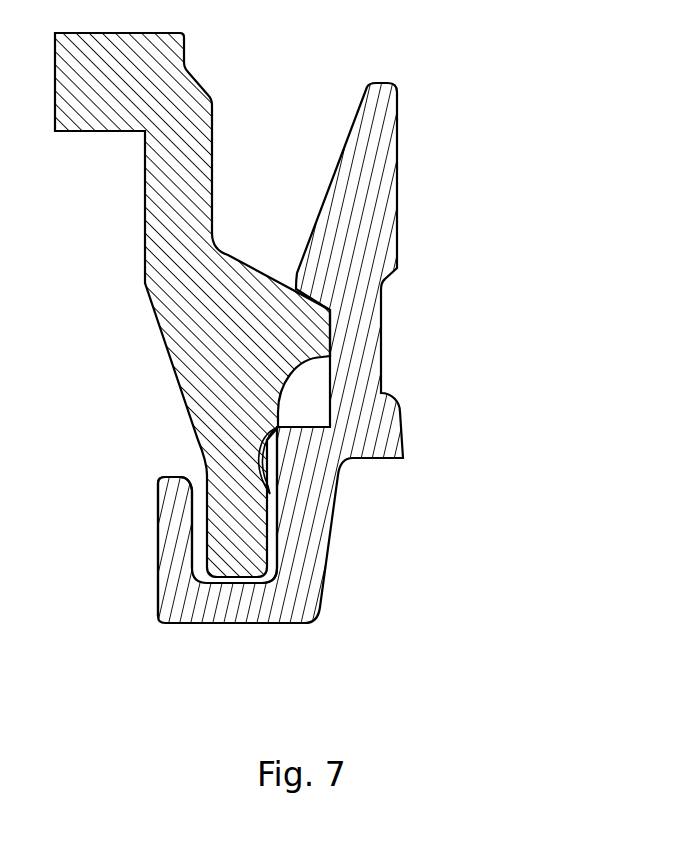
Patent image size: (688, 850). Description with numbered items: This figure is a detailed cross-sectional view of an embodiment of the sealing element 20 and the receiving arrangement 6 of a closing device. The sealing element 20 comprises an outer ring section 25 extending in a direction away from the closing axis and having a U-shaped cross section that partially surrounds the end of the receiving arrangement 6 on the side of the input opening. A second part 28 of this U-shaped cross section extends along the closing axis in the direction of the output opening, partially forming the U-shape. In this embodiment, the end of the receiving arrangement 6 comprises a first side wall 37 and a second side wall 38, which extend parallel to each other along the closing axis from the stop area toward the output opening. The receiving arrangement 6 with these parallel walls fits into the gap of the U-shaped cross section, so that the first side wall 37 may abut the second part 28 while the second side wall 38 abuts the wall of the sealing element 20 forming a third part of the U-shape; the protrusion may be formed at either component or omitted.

The receiving arrangement 6 is at (157, 275).
The sealing element 20 is at (365, 403).
The outer ring section 25 is at (226, 600).
The second part 28 is at (172, 543).
The first side wall 37 is at (207, 497).
The second side wall 38 is at (274, 508).